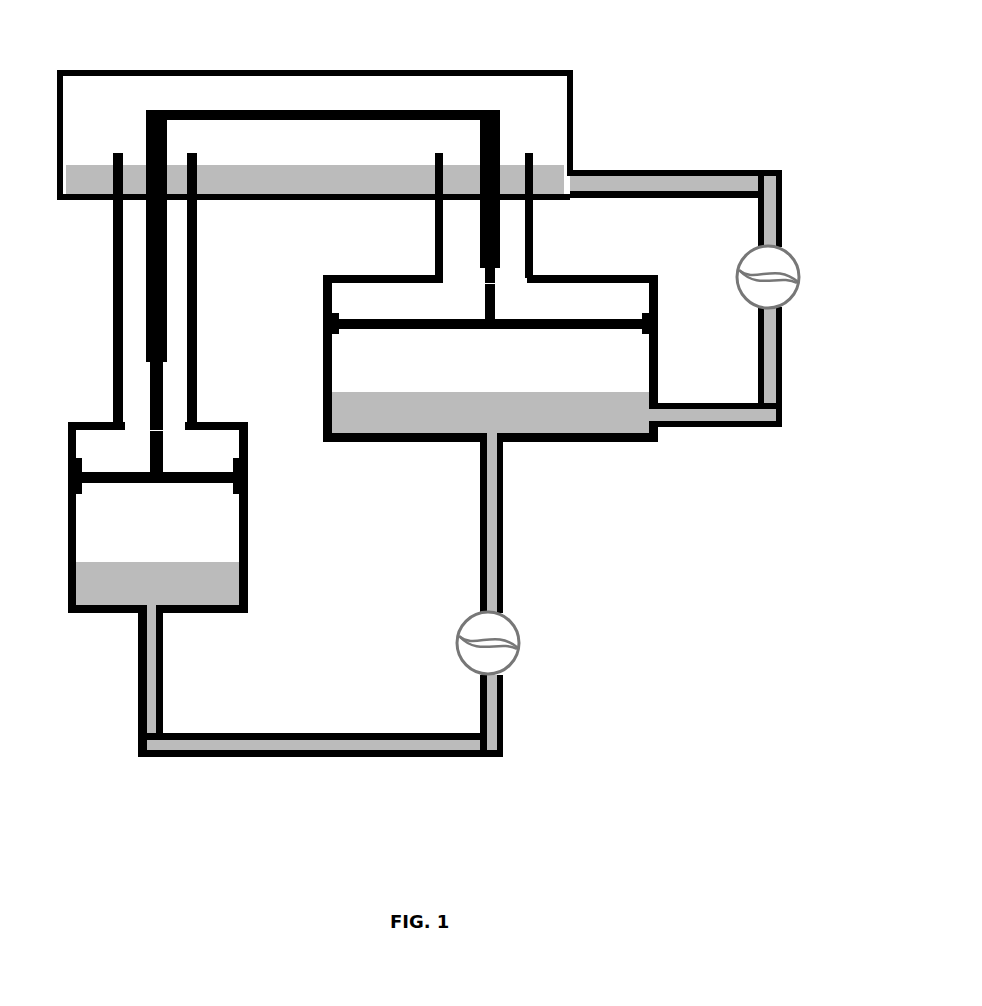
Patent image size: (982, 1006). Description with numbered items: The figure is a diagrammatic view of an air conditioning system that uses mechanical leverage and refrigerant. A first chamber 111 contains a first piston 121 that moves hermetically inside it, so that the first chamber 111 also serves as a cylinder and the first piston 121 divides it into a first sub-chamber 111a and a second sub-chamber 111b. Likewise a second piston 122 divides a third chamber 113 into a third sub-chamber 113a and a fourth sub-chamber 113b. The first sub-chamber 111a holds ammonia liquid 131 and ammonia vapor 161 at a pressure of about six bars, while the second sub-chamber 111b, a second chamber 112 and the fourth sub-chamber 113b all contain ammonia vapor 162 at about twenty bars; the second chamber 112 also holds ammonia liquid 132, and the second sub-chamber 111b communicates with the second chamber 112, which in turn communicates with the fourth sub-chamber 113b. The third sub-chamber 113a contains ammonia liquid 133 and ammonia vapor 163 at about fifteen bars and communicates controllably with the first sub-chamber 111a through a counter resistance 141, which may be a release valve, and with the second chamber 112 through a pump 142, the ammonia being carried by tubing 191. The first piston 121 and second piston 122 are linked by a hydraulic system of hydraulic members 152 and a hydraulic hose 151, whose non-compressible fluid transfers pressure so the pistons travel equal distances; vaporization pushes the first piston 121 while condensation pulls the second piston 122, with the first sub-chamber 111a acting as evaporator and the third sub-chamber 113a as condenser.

The first chamber 111 is at (62, 632).
The first sub-chamber 111a is at (157, 508).
The second sub-chamber 111b is at (157, 444).
The second chamber 112 is at (592, 70).
The third chamber 113 is at (318, 448).
The third sub-chamber 113a is at (490, 350).
The fourth sub-chamber 113b is at (490, 299).
The first piston 121 is at (128, 490).
The second piston 122 is at (417, 340).
The ammonia liquid 131 is at (200, 590).
The ammonia liquid 132 is at (95, 185).
The ammonia liquid 133 is at (632, 417).
The counter resistance 141 is at (527, 654).
The pump 142 is at (804, 298).
The hydraulic hose 151 is at (440, 110).
The hydraulic members 152 is at (480, 228).
The ammonia vapor 161 is at (82, 537).
The ammonia vapor 162 is at (232, 102).
The ammonia vapor 163 is at (349, 380).
The tubing 191 is at (690, 186).